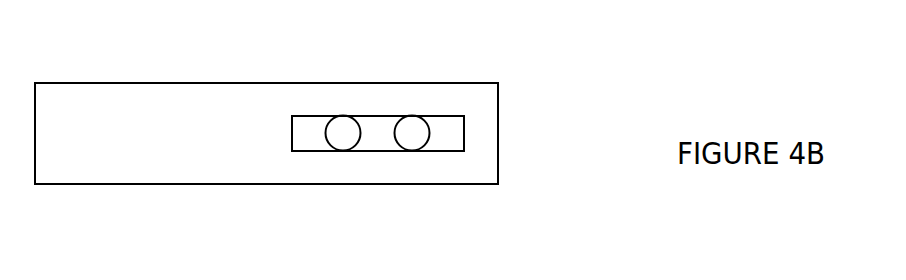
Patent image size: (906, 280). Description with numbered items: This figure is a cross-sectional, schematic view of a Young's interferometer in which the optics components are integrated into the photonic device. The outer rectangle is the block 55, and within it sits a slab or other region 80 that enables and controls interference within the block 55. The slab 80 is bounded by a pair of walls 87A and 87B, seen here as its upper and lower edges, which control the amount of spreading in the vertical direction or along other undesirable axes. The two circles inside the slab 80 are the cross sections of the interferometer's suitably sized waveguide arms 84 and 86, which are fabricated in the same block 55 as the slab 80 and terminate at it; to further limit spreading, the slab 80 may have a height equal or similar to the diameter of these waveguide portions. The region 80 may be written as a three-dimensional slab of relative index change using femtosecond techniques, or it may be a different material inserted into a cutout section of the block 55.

The block 55 is at (117, 82).
The slab 80 is at (377, 116).
The waveguide arm 84 is at (327, 141).
The waveguide arm 86 is at (412, 143).
The wall 87A is at (445, 116).
The wall 87B is at (442, 152).